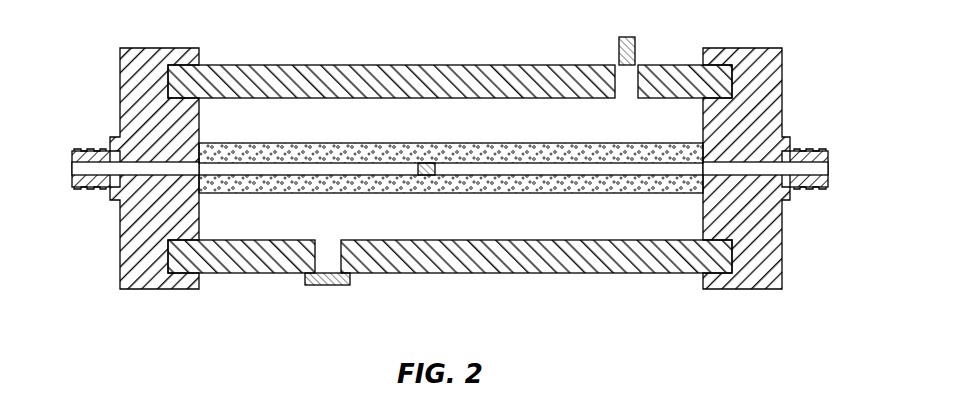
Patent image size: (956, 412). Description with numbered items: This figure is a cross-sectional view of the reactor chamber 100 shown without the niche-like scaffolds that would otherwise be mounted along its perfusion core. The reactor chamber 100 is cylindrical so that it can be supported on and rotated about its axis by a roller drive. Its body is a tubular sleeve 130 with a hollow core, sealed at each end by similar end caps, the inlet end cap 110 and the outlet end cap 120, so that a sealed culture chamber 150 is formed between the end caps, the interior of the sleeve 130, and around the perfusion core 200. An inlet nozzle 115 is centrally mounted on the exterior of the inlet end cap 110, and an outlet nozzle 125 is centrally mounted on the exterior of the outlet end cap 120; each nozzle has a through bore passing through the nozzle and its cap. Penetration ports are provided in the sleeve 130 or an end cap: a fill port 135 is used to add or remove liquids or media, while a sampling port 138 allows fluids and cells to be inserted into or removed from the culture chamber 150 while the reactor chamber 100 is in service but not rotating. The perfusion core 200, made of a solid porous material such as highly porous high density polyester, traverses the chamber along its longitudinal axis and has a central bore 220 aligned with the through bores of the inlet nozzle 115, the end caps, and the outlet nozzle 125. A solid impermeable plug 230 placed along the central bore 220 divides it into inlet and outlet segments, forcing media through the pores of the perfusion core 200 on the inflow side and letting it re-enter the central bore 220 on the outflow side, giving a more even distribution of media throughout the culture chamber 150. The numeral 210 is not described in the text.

The reactor chamber 100 is at (314, 48).
The inlet end cap 110 is at (120, 95).
The inlet nozzle 115 is at (72, 165).
The outlet end cap 120 is at (782, 98).
The outlet nozzle 125 is at (828, 170).
The tubular sleeve 130 is at (577, 273).
The fill port 135 is at (627, 37).
The sampling port 138 is at (325, 285).
The culture chamber 150 is at (560, 115).
The perfusion core 200 is at (248, 187).
The second membrane layer 210 is at (457, 195).
The central bore 220 is at (315, 168).
The solid impermeable plug 230 is at (425, 162).